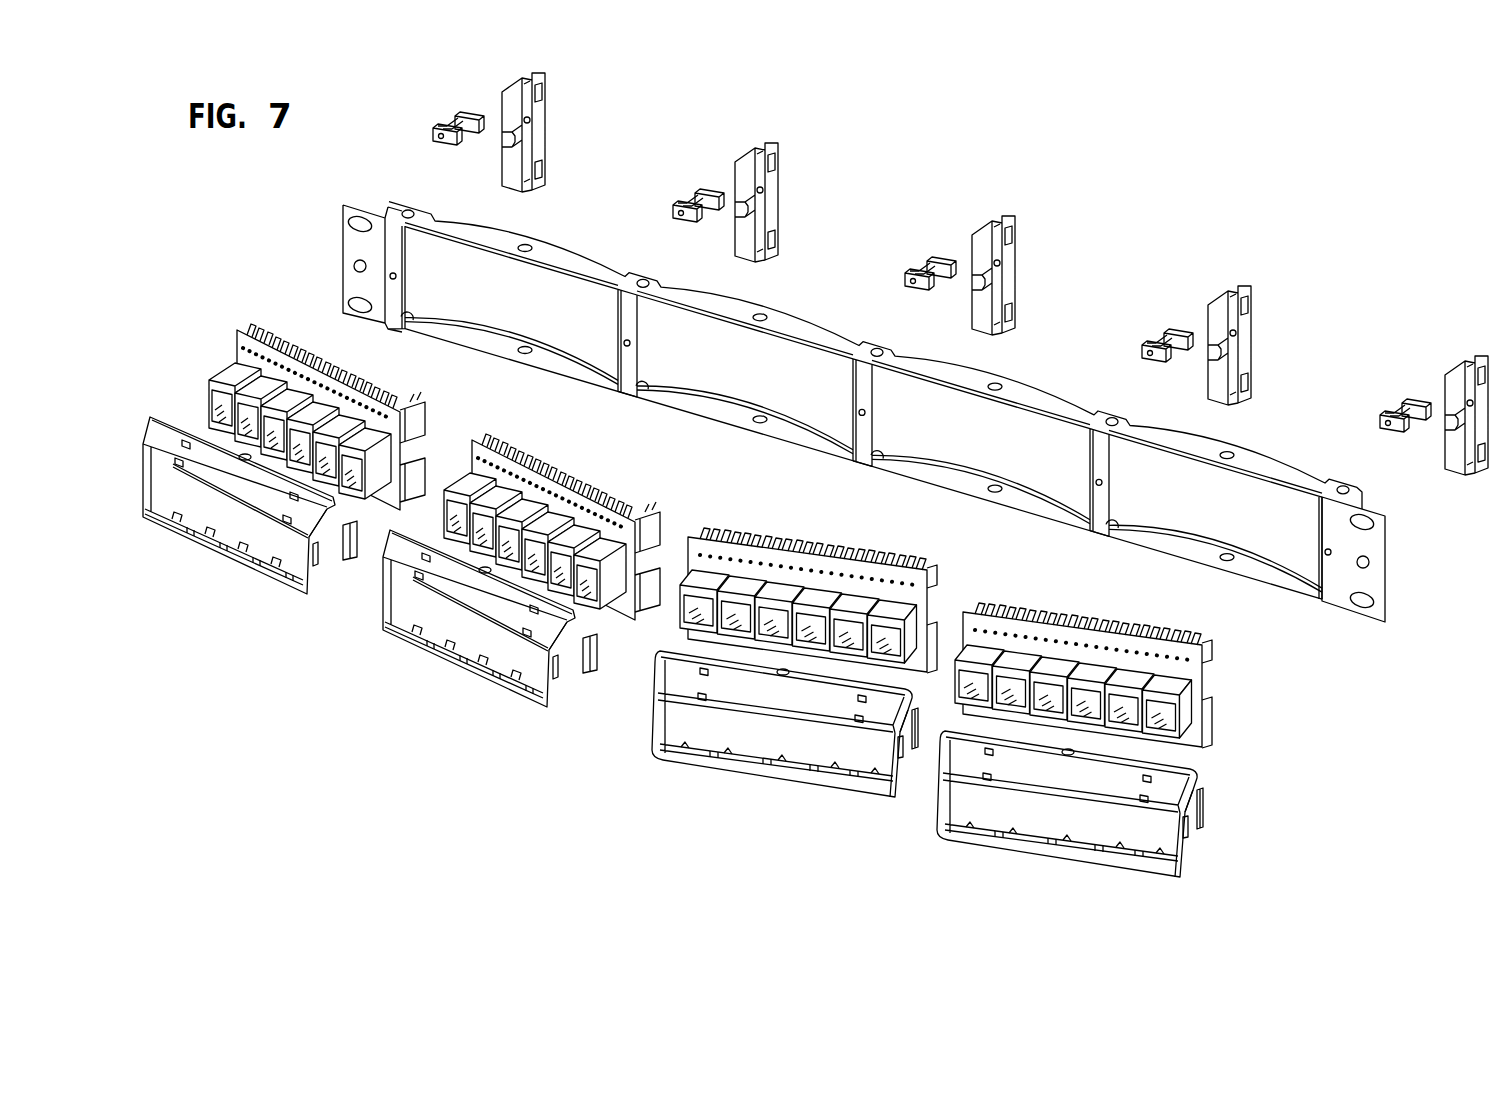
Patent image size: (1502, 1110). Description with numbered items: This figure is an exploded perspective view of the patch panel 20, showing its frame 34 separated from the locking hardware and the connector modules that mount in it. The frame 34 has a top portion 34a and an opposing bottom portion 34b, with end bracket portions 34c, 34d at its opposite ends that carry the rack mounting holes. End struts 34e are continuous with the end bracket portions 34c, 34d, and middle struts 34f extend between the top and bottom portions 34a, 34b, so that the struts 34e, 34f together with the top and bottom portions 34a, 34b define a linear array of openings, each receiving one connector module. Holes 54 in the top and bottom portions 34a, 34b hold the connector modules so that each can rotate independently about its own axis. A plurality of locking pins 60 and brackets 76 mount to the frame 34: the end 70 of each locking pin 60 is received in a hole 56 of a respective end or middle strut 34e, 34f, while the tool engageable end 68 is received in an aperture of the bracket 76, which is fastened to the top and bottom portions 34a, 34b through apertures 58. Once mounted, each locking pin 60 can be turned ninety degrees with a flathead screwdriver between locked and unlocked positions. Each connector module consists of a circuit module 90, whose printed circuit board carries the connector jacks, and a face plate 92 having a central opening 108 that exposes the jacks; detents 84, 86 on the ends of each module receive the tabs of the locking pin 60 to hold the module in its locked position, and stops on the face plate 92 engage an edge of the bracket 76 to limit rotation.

The patch panel 20 is at (1160, 200).
The frame 34 is at (865, 400).
The top portion 34a is at (437, 222).
The bottom portion 34b is at (517, 364).
The end bracket portion 34c is at (341, 263).
The end bracket portion 34d is at (1388, 571).
The end strut 34e is at (406, 293).
The middle strut 34f is at (638, 362).
The hole 54 is at (528, 245).
The hole 56 is at (396, 274).
The aperture 58 is at (406, 209).
The locking pin 60 is at (457, 124).
The tool engageable end 68 is at (468, 122).
The end 70 is at (441, 138).
The bracket 76 is at (545, 94).
The detent 84 is at (314, 567).
The detent 86 is at (346, 562).
The circuit module 90 is at (236, 346).
The face plate 92 is at (691, 668).
The central opening 108 is at (215, 530).